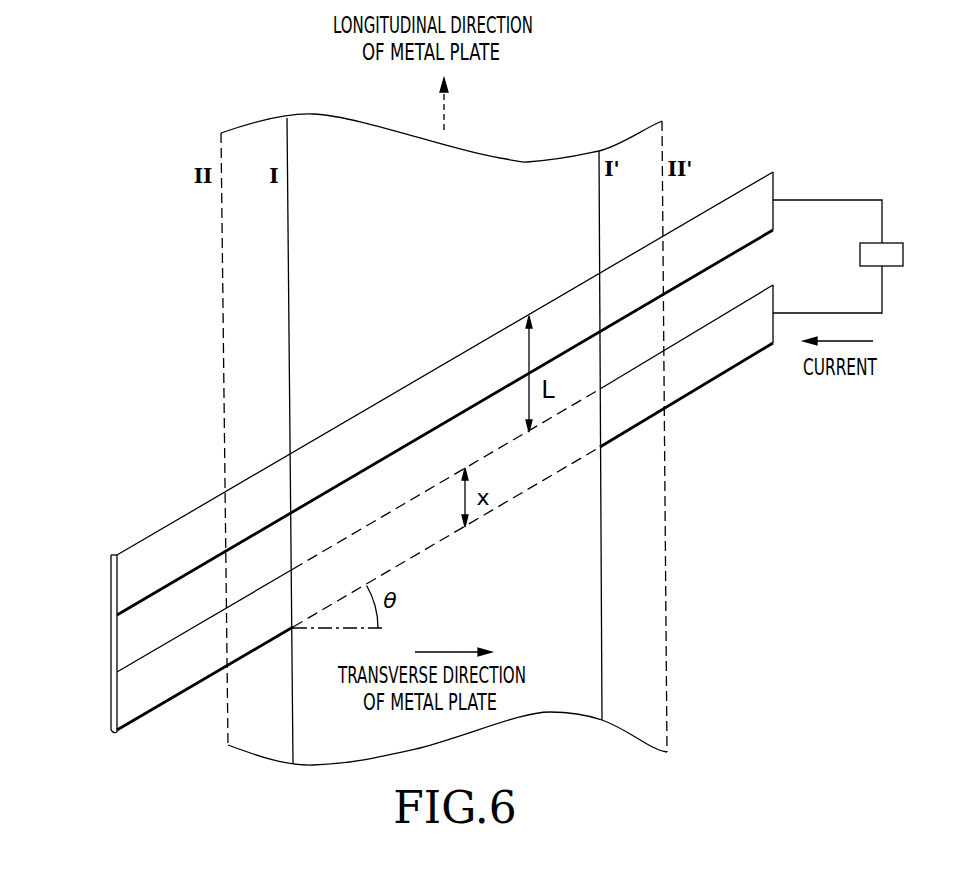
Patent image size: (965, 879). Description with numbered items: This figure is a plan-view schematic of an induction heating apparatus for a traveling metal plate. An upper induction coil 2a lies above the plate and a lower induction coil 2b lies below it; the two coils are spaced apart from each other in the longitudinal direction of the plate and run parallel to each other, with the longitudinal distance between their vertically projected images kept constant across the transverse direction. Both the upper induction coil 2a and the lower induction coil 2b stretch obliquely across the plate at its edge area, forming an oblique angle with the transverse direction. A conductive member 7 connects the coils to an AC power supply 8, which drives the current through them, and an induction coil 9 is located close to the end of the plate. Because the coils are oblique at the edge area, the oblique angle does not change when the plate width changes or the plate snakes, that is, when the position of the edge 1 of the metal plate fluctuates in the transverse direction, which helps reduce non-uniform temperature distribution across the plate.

The edge of the metal plate 1 is at (507, 168).
The upper induction coil 2a is at (388, 413).
The lower induction coil 2b is at (713, 371).
The conductive member 7 is at (823, 200).
The AC power supply 8 is at (903, 252).
The induction coil located close to an edge of the metal plate 9 is at (112, 625).